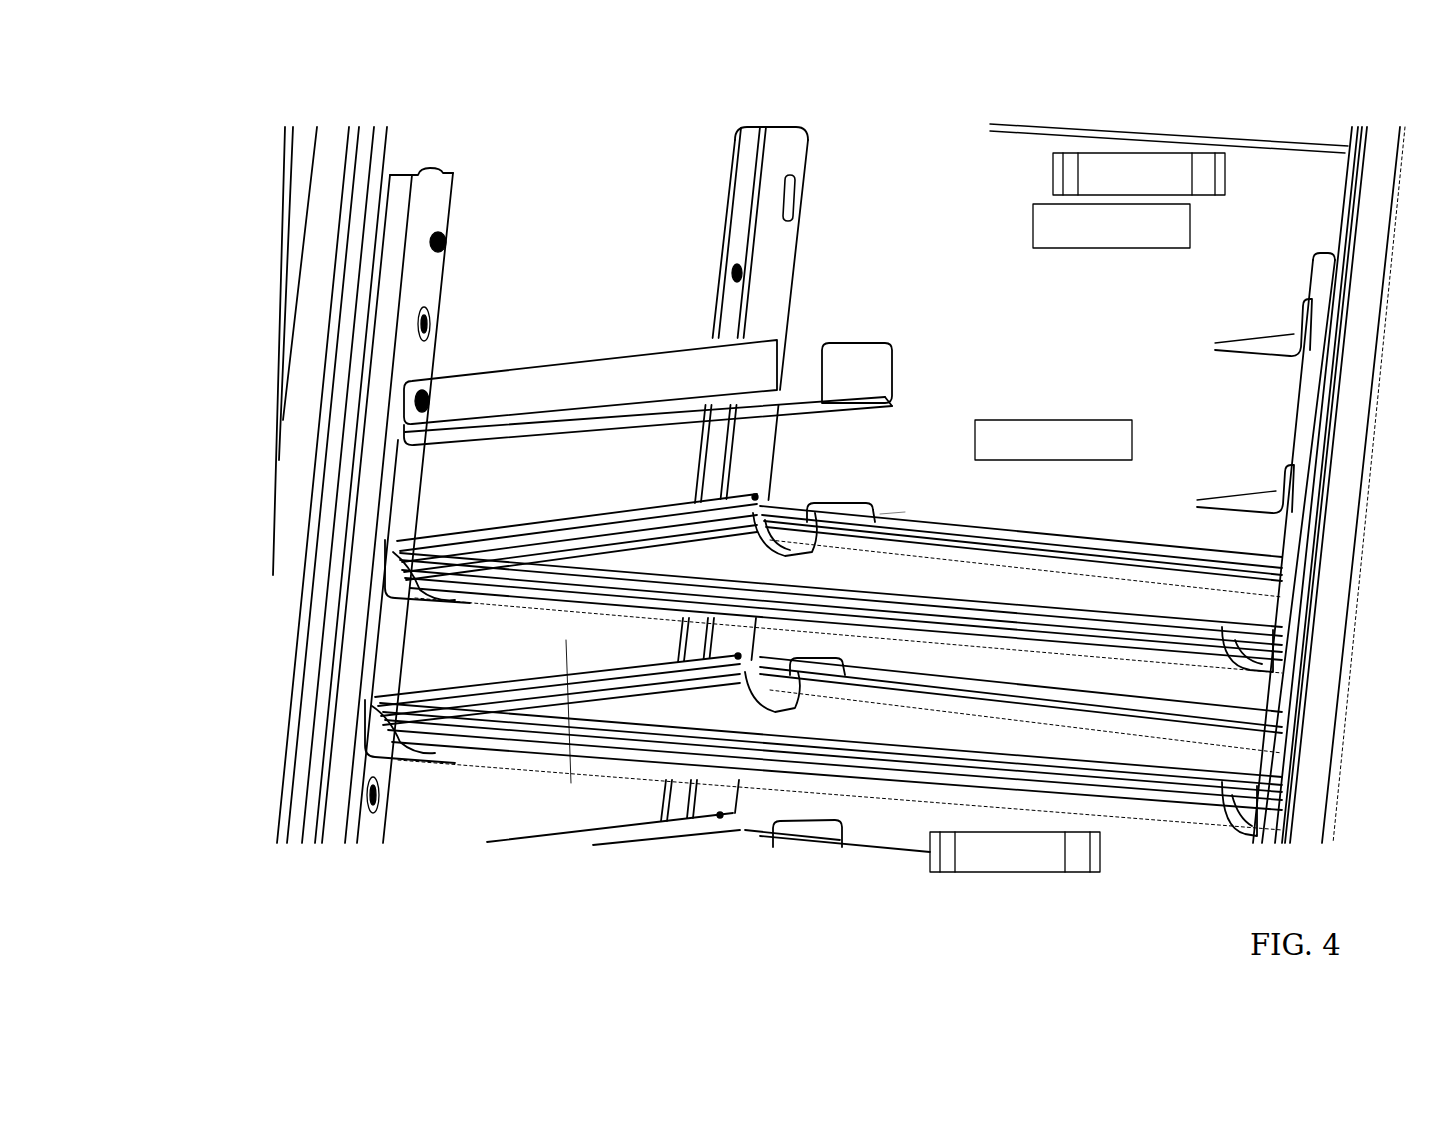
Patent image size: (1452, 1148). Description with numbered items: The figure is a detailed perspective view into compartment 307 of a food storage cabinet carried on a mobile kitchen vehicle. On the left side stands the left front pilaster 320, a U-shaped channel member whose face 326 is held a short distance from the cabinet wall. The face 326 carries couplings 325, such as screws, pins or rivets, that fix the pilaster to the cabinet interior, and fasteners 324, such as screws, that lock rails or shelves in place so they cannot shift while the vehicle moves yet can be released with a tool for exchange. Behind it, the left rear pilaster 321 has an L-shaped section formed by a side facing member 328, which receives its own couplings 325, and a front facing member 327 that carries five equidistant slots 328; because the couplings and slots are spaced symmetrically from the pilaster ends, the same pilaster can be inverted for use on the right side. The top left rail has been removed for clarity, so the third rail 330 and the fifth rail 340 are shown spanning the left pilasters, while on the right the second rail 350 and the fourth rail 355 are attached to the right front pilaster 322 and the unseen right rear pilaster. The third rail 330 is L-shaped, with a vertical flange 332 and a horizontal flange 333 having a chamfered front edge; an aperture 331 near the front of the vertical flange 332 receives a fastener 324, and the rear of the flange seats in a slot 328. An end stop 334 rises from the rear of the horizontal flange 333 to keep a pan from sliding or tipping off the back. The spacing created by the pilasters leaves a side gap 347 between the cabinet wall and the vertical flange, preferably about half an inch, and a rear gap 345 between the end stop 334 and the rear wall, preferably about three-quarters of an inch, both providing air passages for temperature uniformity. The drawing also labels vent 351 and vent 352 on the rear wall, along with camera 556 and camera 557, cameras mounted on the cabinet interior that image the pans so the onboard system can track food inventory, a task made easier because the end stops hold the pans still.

The compartment 307 is at (1168, 85).
The left front pilaster 320 is at (375, 452).
The left rear pilaster 321 is at (780, 431).
The right front pilaster 322 is at (1323, 255).
The fasteners 324 is at (413, 398).
The couplings 325 is at (733, 276).
The face 326 is at (443, 220).
The front facing member 327 is at (792, 153).
The slots 328 is at (748, 157).
The third rail 330 is at (604, 488).
The aperture 331 is at (410, 399).
The vertical flange 332 is at (404, 427).
The horizontal flange 333 is at (482, 447).
The end stop 334 is at (880, 372).
The fifth rail 340 is at (388, 612).
The rear gap 345 is at (905, 512).
The side gap 347 is at (565, 640).
The second rail 350 is at (1267, 340).
The vent 351 is at (1139, 174).
The vent 352 is at (1015, 852).
The fourth rail 355 is at (1255, 500).
The camera 556 is at (1111, 226).
The camera 557 is at (1053, 440).